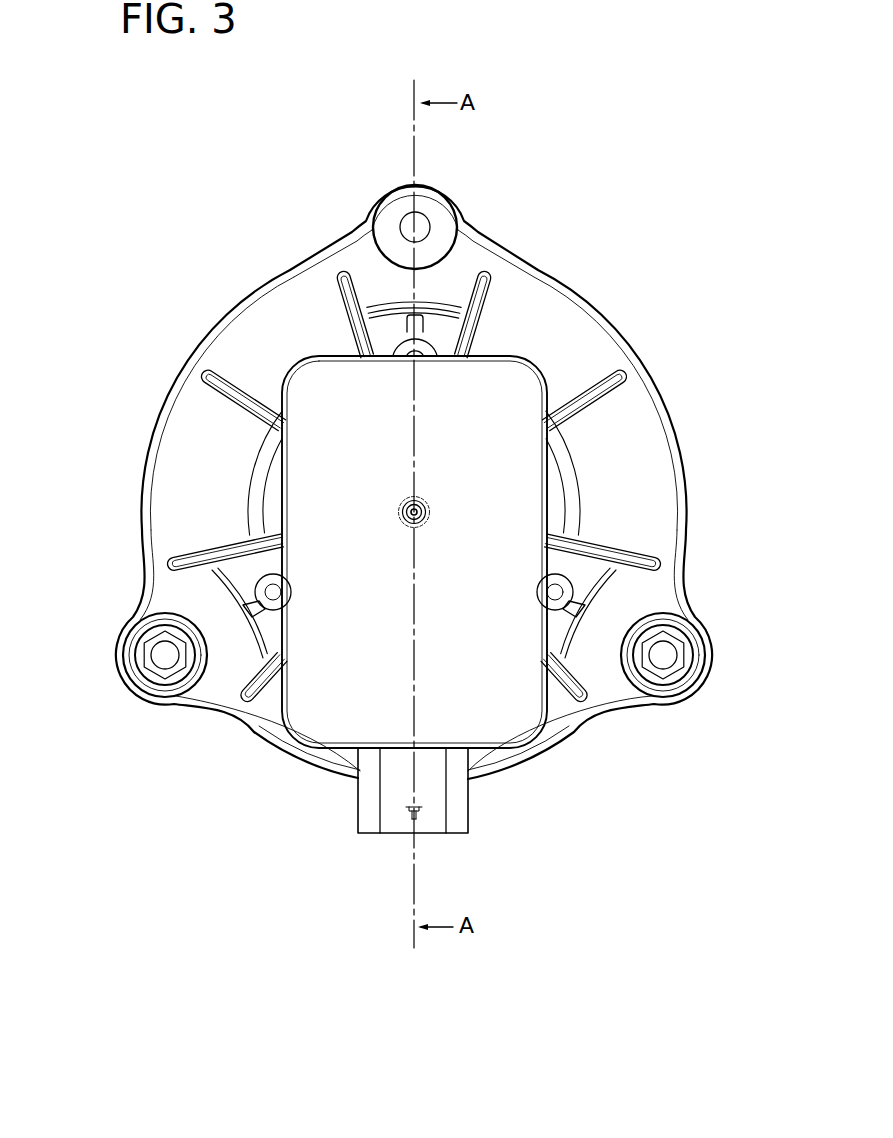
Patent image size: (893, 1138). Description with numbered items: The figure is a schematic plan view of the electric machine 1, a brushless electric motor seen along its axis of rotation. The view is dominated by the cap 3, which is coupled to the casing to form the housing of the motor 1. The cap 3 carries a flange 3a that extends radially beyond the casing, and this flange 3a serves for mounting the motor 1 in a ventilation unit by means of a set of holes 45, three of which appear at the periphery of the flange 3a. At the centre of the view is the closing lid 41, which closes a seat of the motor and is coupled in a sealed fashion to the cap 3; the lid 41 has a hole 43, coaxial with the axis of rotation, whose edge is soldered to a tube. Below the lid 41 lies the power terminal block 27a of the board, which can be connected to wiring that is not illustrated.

The electric machine 1 is at (612, 283).
The cap 3 is at (302, 305).
The flange 3a is at (628, 468).
The closing lid 41 is at (318, 403).
The hole 43 is at (405, 511).
The holes 45 is at (420, 225).
The power terminal block 27a is at (372, 837).